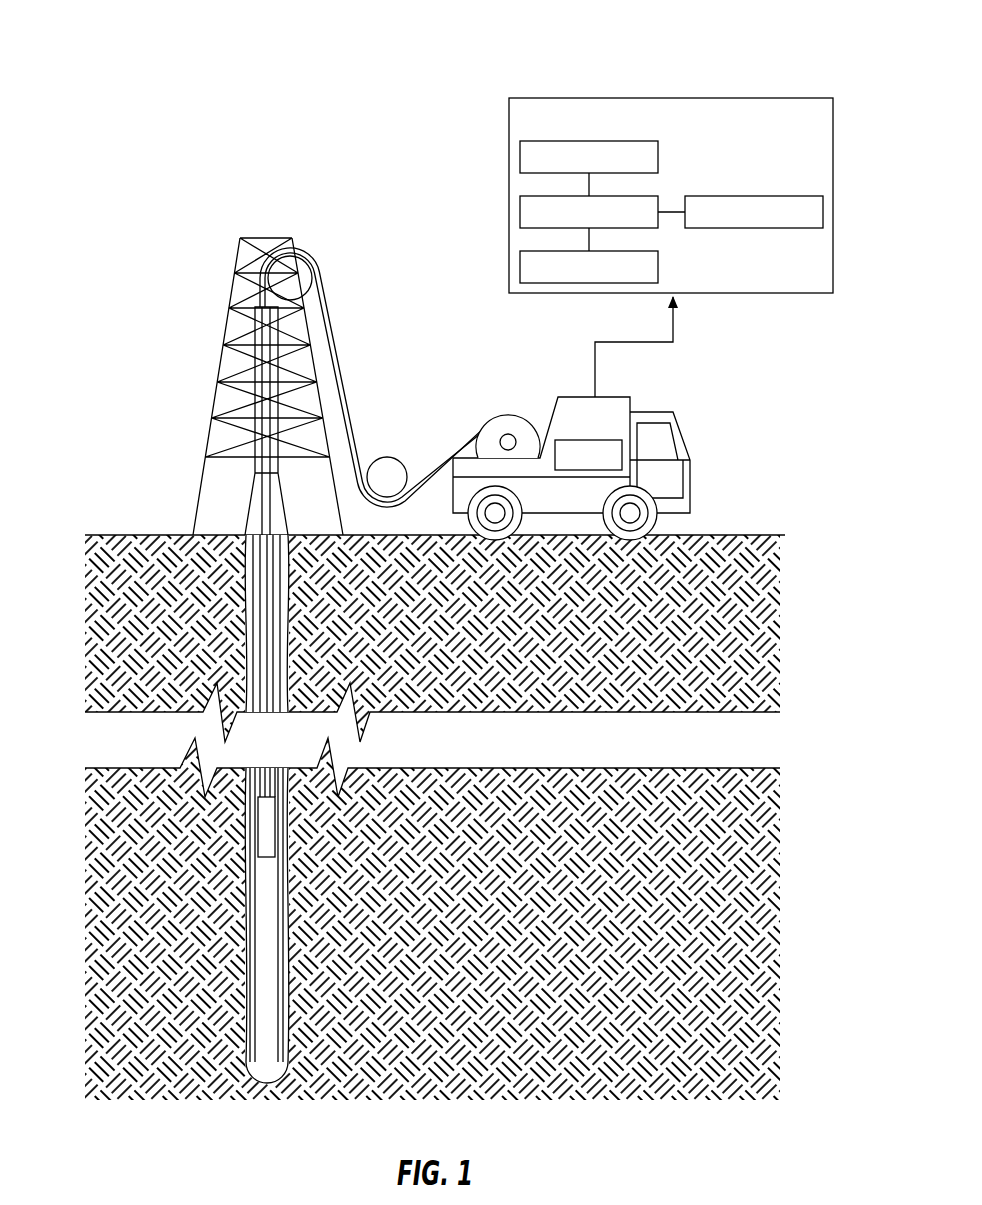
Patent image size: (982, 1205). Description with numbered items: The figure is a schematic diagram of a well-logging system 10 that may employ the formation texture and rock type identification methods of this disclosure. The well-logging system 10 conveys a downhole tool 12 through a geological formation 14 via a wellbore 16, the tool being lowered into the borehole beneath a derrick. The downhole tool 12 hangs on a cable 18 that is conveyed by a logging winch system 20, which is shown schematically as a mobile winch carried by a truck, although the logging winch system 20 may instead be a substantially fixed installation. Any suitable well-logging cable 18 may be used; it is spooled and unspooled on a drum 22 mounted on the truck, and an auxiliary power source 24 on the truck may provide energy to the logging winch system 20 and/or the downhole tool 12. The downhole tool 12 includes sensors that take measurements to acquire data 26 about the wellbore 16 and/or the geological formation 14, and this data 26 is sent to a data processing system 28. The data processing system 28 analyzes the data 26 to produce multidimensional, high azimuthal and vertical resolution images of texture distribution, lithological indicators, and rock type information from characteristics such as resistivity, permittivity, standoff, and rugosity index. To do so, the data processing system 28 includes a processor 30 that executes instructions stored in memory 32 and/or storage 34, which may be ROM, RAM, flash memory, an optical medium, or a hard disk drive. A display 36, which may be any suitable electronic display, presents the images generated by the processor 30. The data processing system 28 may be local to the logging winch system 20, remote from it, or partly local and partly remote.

The well-logging system 10 is at (148, 283).
The downhole tool 12 is at (260, 812).
The geological formation 14 is at (117, 863).
The wellbore 16 is at (245, 588).
The cable 18 is at (352, 380).
The logging winch system 20 is at (570, 430).
The drum 22 is at (500, 410).
The auxiliary power source 24 is at (567, 440).
The data 26 is at (673, 325).
The data processing system 28 is at (639, 170).
The processor 30 is at (648, 195).
The memory 32 is at (520, 155).
The storage 34 is at (660, 270).
The display 36 is at (743, 195).